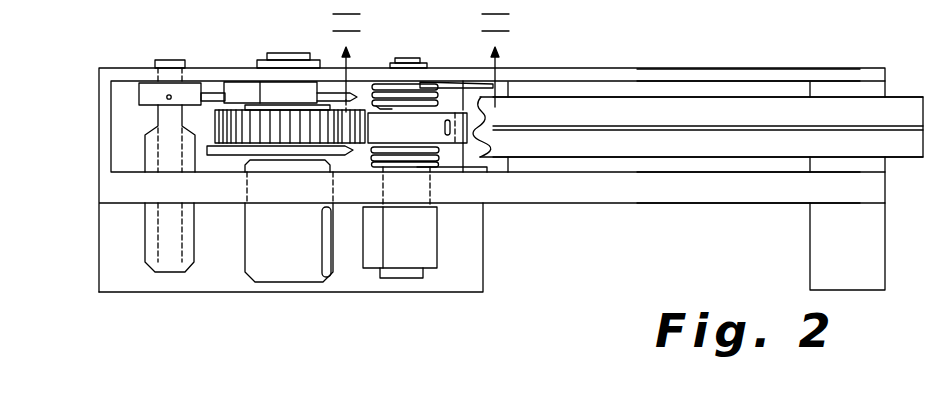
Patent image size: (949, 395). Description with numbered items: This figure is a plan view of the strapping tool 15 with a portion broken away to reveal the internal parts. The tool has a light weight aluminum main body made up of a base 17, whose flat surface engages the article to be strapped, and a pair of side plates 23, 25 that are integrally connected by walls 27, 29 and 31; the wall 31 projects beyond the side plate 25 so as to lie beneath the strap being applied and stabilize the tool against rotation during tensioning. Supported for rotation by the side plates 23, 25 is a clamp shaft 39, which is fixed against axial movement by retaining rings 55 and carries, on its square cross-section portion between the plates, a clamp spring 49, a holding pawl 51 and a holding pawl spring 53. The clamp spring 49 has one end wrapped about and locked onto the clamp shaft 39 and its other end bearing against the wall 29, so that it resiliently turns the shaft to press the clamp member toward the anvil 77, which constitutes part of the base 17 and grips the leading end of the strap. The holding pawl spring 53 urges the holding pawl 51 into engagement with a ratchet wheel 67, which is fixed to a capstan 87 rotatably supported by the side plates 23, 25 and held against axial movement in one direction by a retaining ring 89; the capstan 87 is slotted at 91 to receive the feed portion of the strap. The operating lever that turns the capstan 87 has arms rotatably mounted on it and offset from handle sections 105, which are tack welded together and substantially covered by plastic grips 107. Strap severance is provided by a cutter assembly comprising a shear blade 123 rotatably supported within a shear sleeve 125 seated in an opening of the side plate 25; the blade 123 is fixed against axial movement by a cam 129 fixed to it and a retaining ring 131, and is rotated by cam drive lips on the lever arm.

The tool 15 is at (537, 230).
The base 17 is at (218, 267).
The side plate 23 is at (637, 70).
The side plate 25 is at (722, 192).
The wall 27 is at (103, 135).
The wall 29 is at (540, 173).
The wall 31 is at (877, 88).
The clamp shaft 39 is at (408, 55).
The clamp spring 49 is at (378, 90).
The holding pawl 51 is at (477, 123).
The holding pawl spring 53 is at (410, 160).
The retaining rings 55 is at (430, 66).
The ratchet wheel 67 is at (247, 125).
The anvil 77 is at (388, 287).
The capstan 87 is at (273, 260).
The retaining ring 89 is at (283, 65).
The slot 91 is at (327, 238).
The handle sections 105 is at (572, 120).
The grips 107 is at (747, 108).
The shear blade 123 is at (162, 118).
The shear sleeve 125 is at (158, 247).
The cam 129 is at (152, 92).
The retaining ring 131 is at (150, 62).